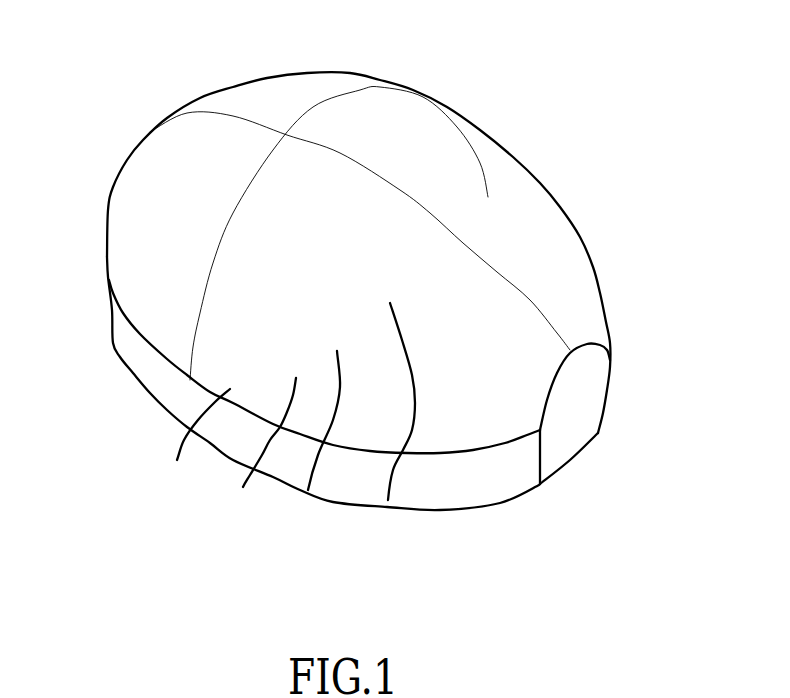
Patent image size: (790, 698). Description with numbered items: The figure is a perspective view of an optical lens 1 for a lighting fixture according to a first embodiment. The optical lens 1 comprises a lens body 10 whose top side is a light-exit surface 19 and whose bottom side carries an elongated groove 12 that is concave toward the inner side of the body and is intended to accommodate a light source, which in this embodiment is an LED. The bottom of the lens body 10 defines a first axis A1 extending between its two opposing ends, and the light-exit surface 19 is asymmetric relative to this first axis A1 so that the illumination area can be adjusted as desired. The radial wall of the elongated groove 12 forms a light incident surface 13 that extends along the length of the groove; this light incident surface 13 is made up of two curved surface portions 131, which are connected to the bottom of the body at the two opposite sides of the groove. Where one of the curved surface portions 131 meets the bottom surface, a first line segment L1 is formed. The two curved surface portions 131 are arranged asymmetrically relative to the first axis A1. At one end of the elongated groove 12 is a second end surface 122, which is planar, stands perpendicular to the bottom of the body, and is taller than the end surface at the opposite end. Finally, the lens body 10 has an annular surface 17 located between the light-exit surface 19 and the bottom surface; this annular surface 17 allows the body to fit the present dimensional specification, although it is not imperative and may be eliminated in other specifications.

The optical lens 1 is at (371, 311).
The light-exit surface 19 is at (546, 186).
The first line segment L1 is at (432, 328).
The first axis A1 is at (487, 413).
The annular surface 17 is at (162, 389).
The second end surface 122 is at (177, 460).
The elongated groove 12 is at (297, 371).
The curved surface portions 131 is at (308, 490).
The light incident surface 13 is at (412, 571).
The lens body 10 is at (465, 509).